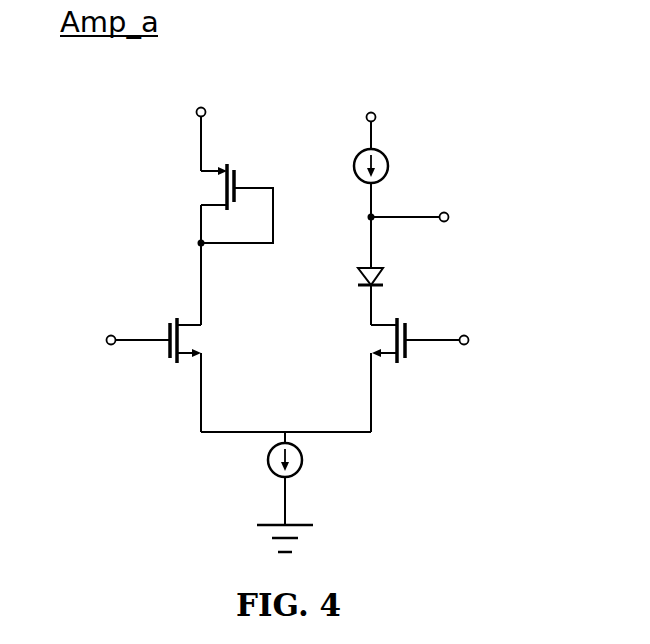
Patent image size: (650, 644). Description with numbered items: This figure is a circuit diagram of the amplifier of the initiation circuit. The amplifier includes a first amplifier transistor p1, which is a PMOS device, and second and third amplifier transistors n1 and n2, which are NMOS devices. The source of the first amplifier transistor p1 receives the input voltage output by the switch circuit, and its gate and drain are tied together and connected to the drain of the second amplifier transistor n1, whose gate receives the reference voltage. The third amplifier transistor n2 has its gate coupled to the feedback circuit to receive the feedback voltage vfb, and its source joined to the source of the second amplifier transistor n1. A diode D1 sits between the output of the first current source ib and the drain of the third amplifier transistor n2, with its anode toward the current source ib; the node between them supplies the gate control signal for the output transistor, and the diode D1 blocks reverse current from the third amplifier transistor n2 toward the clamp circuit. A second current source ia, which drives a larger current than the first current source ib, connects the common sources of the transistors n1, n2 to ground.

The first amplifier transistor p1 is at (222, 244).
The second amplifier transistor n1 is at (207, 375).
The third amplifier transistor n2 is at (373, 375).
The first current source ib is at (392, 208).
The second current source ia is at (312, 492).
The diode D1 is at (405, 293).
The feedback voltage vfb is at (461, 339).